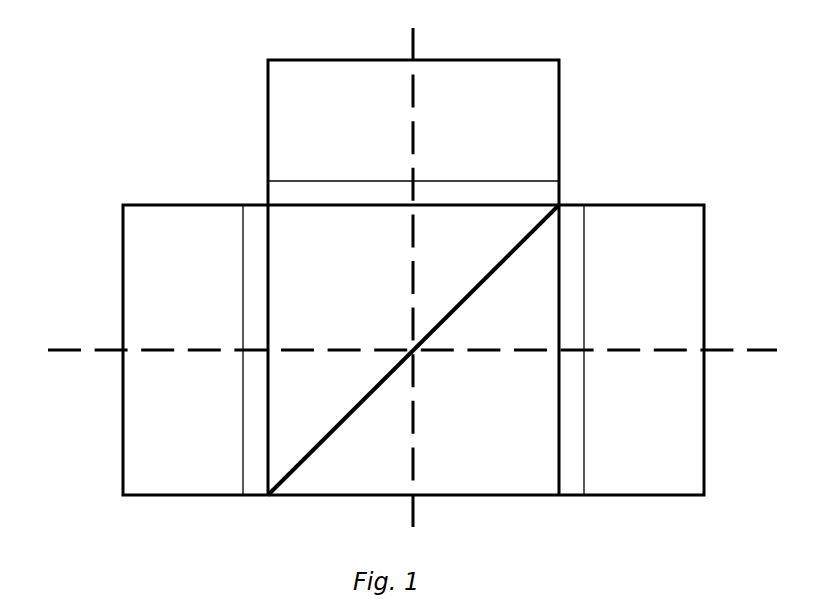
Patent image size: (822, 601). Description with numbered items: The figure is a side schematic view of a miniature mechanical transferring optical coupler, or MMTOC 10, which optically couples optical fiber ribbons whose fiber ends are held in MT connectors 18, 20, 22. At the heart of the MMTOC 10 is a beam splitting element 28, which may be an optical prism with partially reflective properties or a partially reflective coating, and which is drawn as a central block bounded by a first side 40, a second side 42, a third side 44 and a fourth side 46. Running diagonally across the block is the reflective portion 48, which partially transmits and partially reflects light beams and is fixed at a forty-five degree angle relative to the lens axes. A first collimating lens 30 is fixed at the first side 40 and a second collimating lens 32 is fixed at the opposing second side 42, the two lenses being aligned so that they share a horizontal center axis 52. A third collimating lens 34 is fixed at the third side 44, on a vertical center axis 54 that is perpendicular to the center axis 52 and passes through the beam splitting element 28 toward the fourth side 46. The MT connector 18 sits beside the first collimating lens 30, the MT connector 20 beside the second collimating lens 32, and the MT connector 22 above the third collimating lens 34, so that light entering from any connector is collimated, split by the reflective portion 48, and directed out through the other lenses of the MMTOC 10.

The miniature mechanical transferring optical coupler 10 is at (697, 100).
The MT connector 18 is at (142, 288).
The MT connector 20 is at (688, 278).
The MT connector 22 is at (487, 73).
The beam splitting element 28 is at (510, 483).
The first collimating lens 30 is at (253, 487).
The second collimating lens 32 is at (566, 485).
The third collimating lens 34 is at (280, 197).
The first side 40 is at (268, 272).
The second side 42 is at (557, 410).
The third side 44 is at (367, 207).
The fourth side 46 is at (388, 493).
The reflective portion 48 is at (375, 400).
The center axis 52 is at (62, 348).
The center axis 54 is at (402, 50).